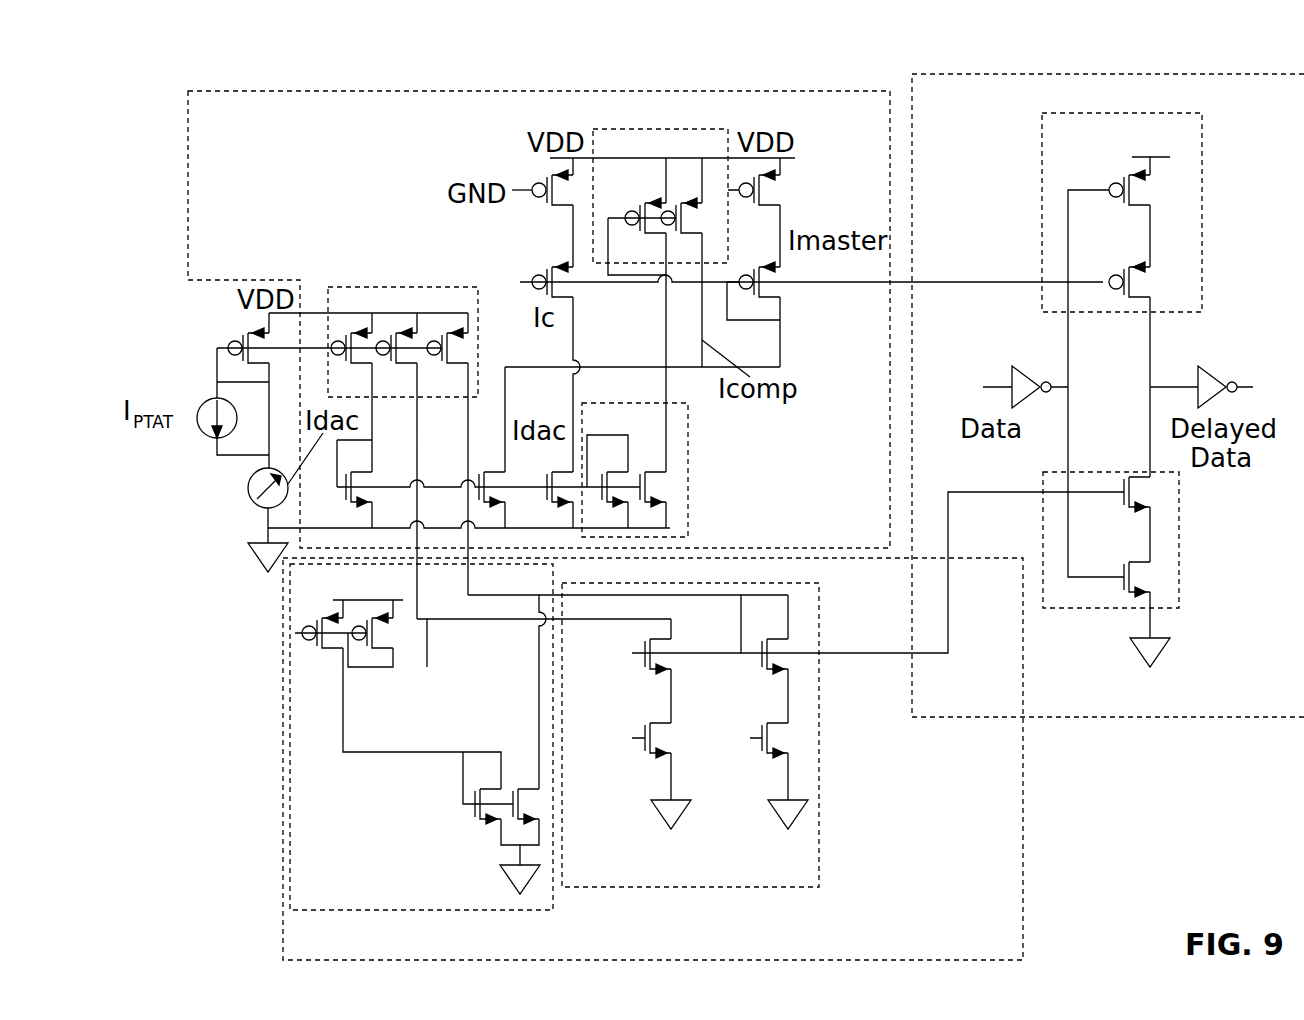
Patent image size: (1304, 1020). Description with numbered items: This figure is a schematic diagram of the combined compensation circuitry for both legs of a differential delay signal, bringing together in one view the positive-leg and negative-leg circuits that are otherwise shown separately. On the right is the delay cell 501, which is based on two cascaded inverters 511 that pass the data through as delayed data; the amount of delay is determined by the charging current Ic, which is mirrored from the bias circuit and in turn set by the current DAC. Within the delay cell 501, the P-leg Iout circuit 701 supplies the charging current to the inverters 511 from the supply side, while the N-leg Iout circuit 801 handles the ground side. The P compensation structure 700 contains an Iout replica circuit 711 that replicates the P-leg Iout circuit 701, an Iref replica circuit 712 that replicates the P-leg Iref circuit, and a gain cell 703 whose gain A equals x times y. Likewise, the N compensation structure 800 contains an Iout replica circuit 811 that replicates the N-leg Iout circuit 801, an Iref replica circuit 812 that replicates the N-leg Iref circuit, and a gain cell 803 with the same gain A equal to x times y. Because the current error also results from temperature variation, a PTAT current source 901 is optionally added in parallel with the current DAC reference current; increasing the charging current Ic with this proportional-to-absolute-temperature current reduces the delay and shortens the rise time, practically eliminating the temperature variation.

The P compensation structure 700 is at (262, 91).
The Iout replica circuit 711 is at (667, 128).
The Iref replica circuit 712 is at (402, 326).
The Iref replica circuit 812 is at (450, 287).
The gain cell 703 is at (690, 468).
The PTAT current source 901 is at (192, 425).
The N compensation structure 800 is at (283, 705).
The gain cell 803 is at (358, 912).
The Iout replica circuit 811 is at (751, 888).
The delay cell 501 is at (978, 73).
The P-leg Iout circuit 701 is at (1112, 112).
The inverter 511 is at (1028, 372).
The N-leg Iout circuit 801 is at (1180, 555).